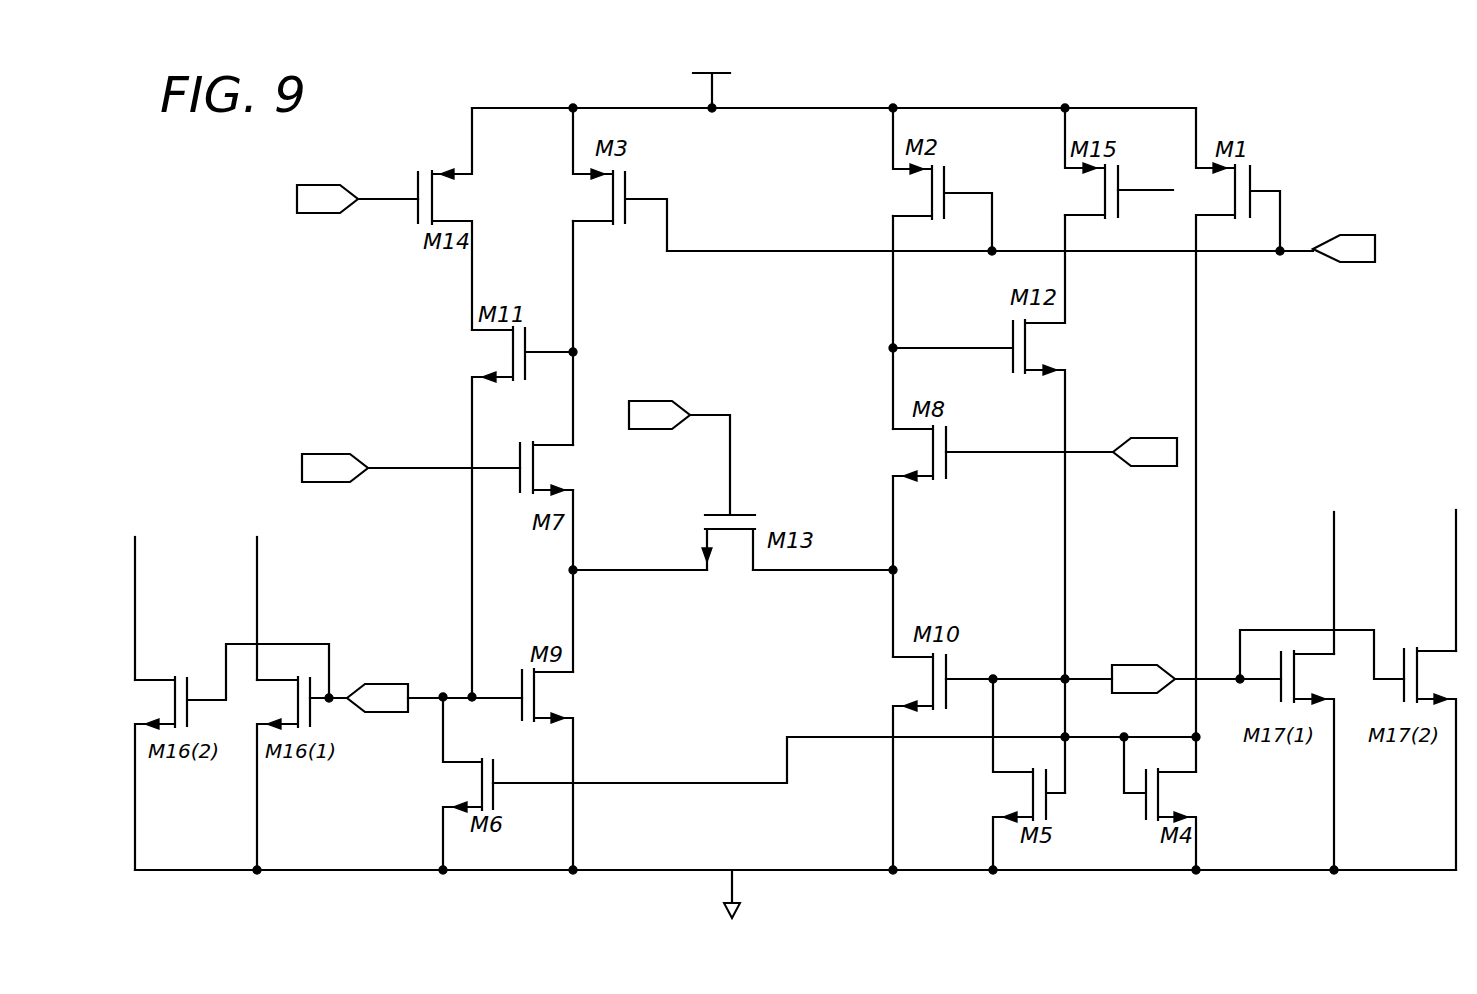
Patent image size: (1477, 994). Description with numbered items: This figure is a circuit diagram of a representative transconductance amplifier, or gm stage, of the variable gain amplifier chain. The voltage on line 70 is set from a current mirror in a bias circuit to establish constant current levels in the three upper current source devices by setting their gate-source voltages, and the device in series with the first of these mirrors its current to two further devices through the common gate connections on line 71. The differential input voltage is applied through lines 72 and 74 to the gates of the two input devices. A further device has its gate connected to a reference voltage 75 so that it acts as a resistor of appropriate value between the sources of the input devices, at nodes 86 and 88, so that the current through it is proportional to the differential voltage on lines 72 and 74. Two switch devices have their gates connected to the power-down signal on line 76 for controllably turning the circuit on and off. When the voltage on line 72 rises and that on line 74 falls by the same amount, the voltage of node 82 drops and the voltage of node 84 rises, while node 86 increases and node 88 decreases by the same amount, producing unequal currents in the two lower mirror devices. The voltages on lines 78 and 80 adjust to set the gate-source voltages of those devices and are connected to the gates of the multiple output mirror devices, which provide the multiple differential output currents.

The bias voltage line 70 is at (1297, 249).
The common gate connection line 71 is at (665, 782).
The differential input line 72 is at (400, 466).
The differential input line 74 is at (1033, 452).
The reference voltage 75 is at (707, 412).
The power-down signal line 76 is at (400, 198).
The output line 78 is at (420, 693).
The output line 80 is at (1037, 679).
The node 82 is at (573, 263).
The node 84 is at (892, 288).
The node 86 is at (573, 615).
The node 88 is at (893, 570).